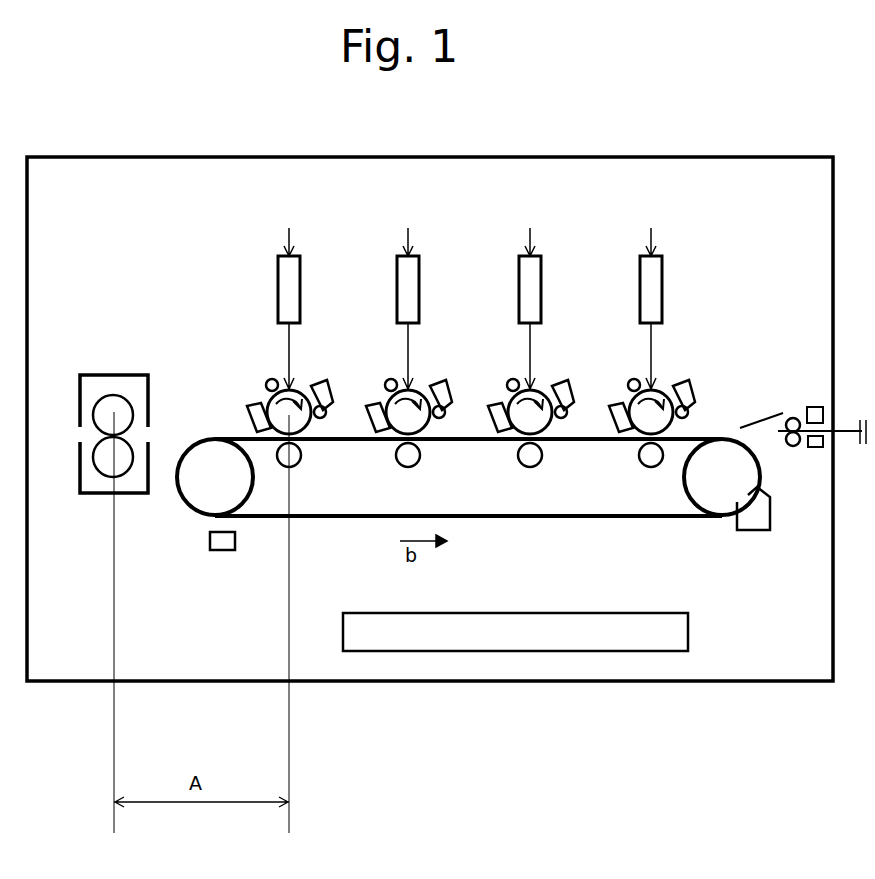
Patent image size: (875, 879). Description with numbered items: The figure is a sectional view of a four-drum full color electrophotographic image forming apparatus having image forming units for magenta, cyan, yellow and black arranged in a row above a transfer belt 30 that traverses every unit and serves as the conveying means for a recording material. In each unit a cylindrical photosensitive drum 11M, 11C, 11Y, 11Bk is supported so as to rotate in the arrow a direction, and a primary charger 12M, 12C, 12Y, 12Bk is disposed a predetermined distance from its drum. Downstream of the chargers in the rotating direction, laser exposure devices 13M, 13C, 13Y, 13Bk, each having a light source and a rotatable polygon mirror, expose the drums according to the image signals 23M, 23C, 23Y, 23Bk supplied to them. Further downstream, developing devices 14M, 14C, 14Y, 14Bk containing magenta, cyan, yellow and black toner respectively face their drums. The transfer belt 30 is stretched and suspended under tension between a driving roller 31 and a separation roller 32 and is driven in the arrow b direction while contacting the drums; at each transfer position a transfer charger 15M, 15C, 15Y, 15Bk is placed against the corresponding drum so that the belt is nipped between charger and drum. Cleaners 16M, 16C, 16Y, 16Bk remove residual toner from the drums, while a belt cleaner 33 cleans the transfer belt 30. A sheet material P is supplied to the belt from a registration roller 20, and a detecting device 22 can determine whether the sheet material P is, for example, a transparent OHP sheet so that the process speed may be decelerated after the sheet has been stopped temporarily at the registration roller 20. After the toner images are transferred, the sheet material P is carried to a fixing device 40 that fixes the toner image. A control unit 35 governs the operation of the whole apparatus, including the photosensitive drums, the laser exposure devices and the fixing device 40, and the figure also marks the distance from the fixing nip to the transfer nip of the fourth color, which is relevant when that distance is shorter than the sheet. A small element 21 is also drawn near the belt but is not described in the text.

The photosensitive drum 11Bk is at (309, 378).
The photosensitive drum 11Y is at (422, 378).
The photosensitive drum 11C is at (545, 378).
The photosensitive drum 11M is at (668, 378).
The primary charger 12Bk is at (239, 375).
The primary charger 12Y is at (382, 365).
The primary charger 12C is at (504, 365).
The primary charger 12M is at (625, 365).
The laser exposure device 13Bk is at (319, 289).
The laser exposure device 13Y is at (432, 289).
The laser exposure device 13C is at (555, 289).
The laser exposure device 13M is at (678, 289).
The developing device 14Bk is at (337, 381).
The developing device 14Y is at (450, 381).
The developing device 14C is at (572, 381).
The developing device 14M is at (695, 381).
The transfer charger 15Bk is at (316, 471).
The transfer charger 15Y is at (429, 471).
The transfer charger 15C is at (551, 471).
The transfer charger 15M is at (671, 471).
The cleaner 16Bk is at (233, 414).
The cleaner 16Y is at (359, 414).
The cleaner 16C is at (480, 414).
The cleaner 16M is at (599, 414).
The image signal 23Bk is at (289, 216).
The image signal 23Y is at (408, 216).
The image signal 23C is at (529, 216).
The image signal 23M is at (651, 216).
The registration roller 20 is at (795, 447).
The sensor 21 is at (228, 550).
The detecting device 22 is at (812, 405).
The transfer belt 30 is at (528, 518).
The driving roller 31 is at (708, 495).
The separation roller 32 is at (205, 487).
The belt cleaner 33 is at (776, 533).
The control unit 35 is at (545, 651).
The fixing device 40 is at (98, 497).
The sheet material P is at (852, 430).